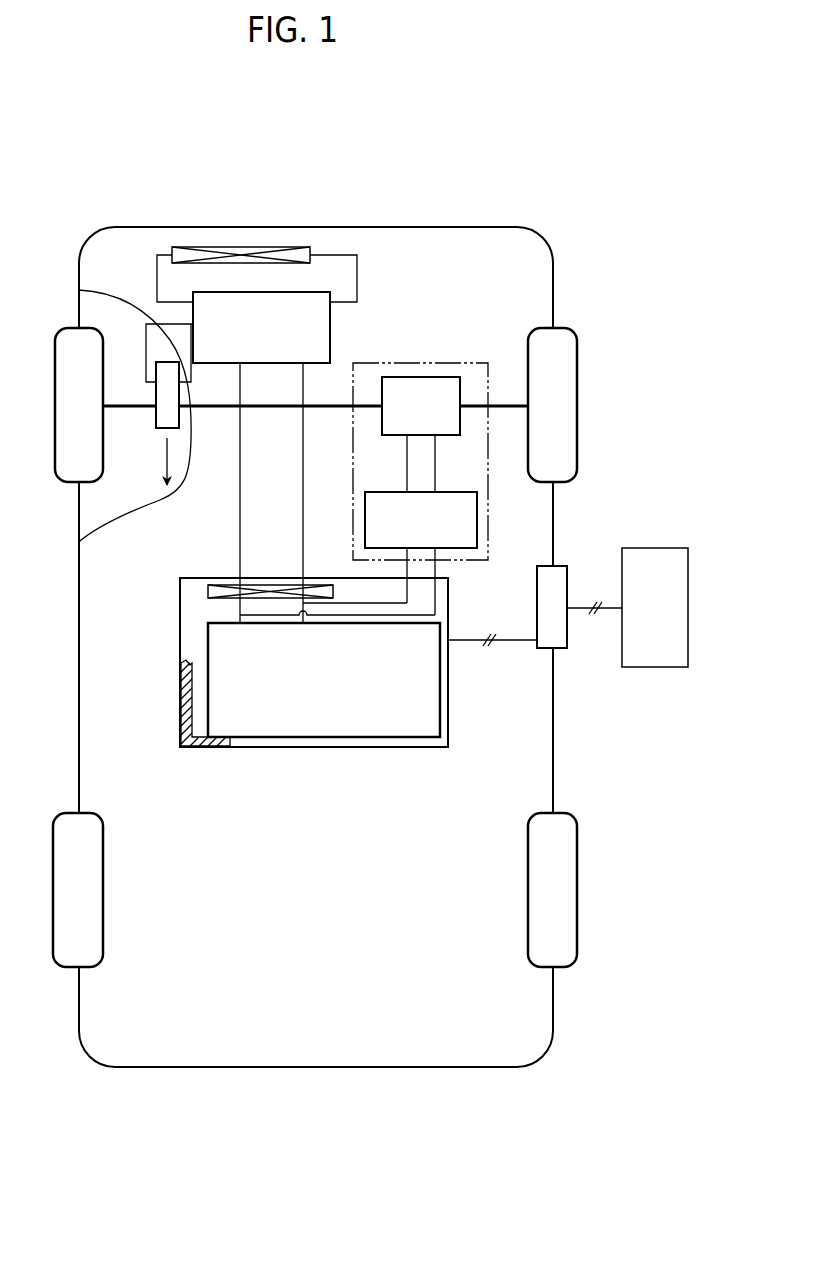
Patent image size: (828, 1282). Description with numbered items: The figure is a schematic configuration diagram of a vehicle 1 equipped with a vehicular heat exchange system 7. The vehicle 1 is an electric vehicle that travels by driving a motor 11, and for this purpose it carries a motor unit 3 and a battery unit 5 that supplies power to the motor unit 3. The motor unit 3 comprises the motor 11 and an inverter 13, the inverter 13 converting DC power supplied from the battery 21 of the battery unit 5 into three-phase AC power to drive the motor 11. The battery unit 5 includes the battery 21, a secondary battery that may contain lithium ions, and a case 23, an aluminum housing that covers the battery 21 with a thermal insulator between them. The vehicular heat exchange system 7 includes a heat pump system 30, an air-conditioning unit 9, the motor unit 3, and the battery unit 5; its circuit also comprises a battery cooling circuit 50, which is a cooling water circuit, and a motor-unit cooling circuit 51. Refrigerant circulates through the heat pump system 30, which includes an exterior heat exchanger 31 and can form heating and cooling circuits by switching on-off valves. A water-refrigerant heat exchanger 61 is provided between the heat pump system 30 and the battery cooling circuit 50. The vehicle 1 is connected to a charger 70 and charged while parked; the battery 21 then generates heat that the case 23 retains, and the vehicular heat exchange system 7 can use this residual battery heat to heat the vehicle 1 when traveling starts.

The vehicle 1 is at (330, 689).
The motor unit 3 is at (420, 438).
The battery unit 5 is at (314, 662).
The vehicular heat exchange system 7 is at (481, 290).
The air-conditioning unit 9 is at (142, 416).
The motor 11 is at (392, 437).
The inverter 13 is at (447, 492).
The battery 21 is at (317, 730).
The case 23 is at (185, 727).
The heat pump system 30 is at (333, 327).
The exterior heat exchanger 31 is at (246, 247).
The battery cooling circuit 50 is at (234, 607).
The motor-unit cooling circuit 51 is at (447, 568).
The water-refrigerant heat exchanger 61 is at (220, 585).
The charger 70 is at (672, 667).